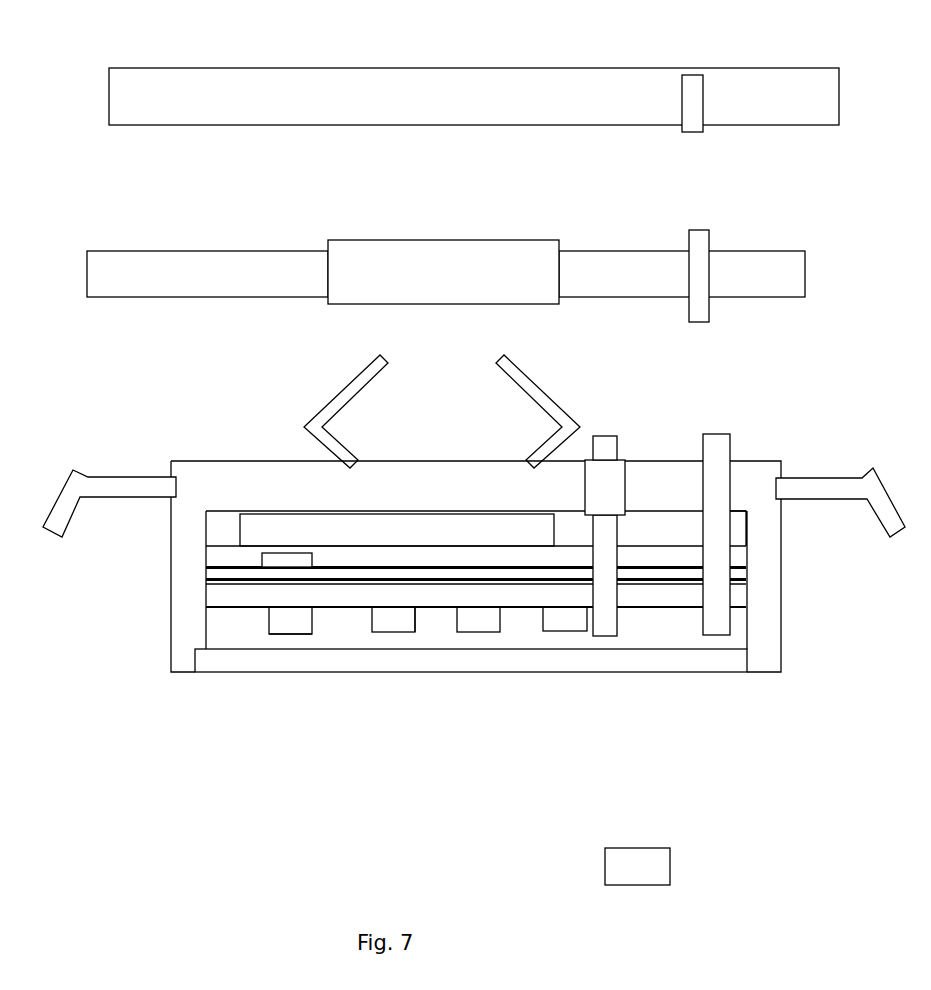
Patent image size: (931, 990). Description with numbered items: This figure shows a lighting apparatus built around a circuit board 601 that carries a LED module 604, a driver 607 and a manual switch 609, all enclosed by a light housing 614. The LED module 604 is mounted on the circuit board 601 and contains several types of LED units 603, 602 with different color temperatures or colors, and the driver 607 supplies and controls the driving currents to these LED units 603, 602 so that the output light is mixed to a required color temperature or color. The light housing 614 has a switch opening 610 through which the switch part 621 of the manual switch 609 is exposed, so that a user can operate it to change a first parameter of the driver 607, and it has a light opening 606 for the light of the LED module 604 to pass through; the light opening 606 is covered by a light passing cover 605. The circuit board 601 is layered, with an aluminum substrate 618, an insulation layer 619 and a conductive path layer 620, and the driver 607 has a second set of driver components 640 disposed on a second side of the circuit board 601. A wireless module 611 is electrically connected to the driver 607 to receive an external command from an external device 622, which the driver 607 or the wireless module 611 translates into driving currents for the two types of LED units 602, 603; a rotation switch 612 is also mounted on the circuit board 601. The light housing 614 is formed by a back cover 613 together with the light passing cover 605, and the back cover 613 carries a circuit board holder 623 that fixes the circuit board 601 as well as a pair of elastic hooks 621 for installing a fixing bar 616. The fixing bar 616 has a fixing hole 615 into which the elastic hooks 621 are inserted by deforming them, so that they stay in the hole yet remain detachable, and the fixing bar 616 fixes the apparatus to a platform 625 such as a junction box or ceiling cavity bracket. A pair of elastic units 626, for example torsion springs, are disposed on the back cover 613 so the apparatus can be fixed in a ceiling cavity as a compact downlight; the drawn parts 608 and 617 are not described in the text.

The circuit board 601 is at (737, 557).
The LED unit 602 is at (483, 627).
The LED unit 603 is at (410, 626).
The LED module 604 is at (378, 625).
The light passing cover 605 is at (639, 665).
The light opening 606 is at (433, 638).
The driver 607 is at (282, 620).
The heating element 608 is at (290, 632).
The manual switch 609 is at (607, 538).
The switch opening 610 is at (620, 470).
The wireless module 611 is at (557, 619).
The rotation switch 612 is at (715, 443).
The back cover 613 is at (778, 472).
The light housing 614 is at (205, 488).
The fixing hole 615 is at (415, 247).
The fixing bar 616 is at (605, 250).
The flange 617 is at (709, 247).
The aluminum substrate 618 is at (212, 558).
The insulation layer 619 is at (212, 578).
The conductive path layer 620 is at (223, 597).
The switch part 621 is at (603, 443).
The external device 622 is at (668, 853).
The circuit board holder 623 is at (437, 530).
The platform 625 is at (495, 88).
The elastic units 626 is at (70, 505).
The second set of driver components 640 is at (278, 563).